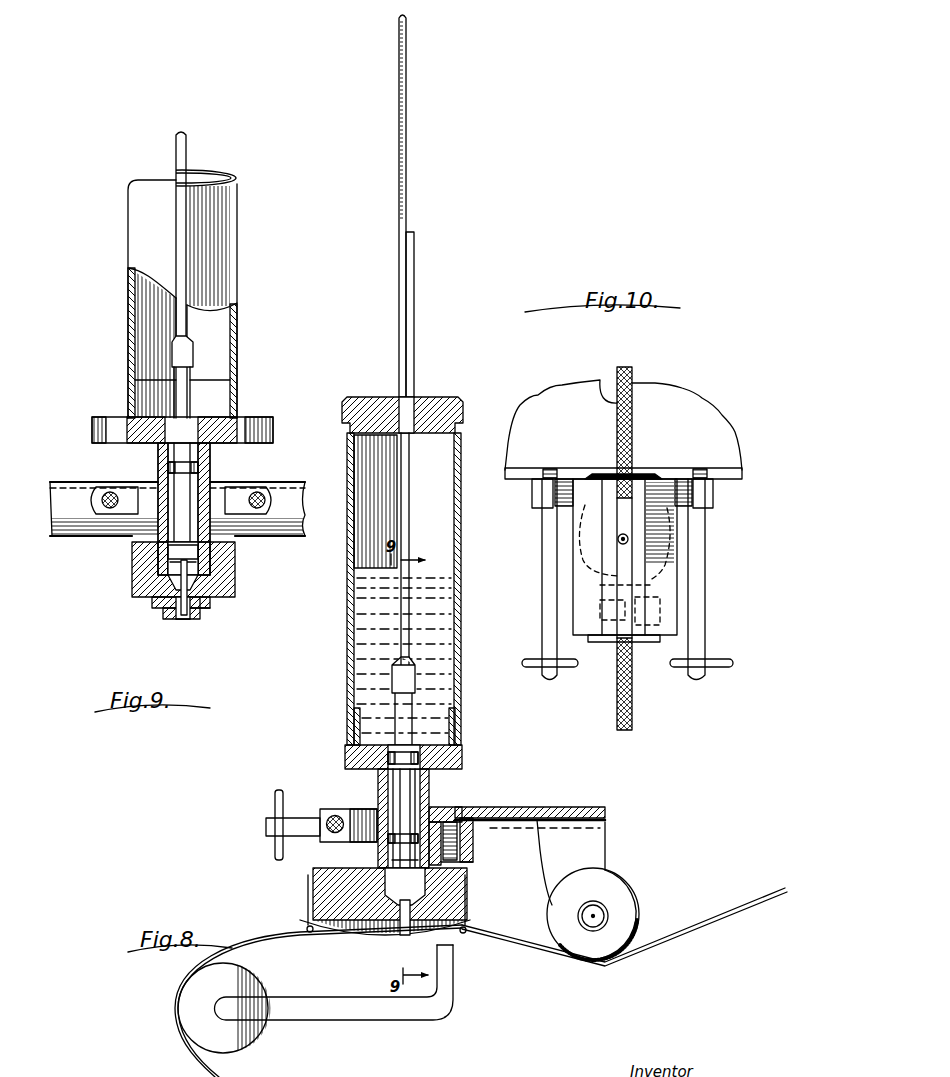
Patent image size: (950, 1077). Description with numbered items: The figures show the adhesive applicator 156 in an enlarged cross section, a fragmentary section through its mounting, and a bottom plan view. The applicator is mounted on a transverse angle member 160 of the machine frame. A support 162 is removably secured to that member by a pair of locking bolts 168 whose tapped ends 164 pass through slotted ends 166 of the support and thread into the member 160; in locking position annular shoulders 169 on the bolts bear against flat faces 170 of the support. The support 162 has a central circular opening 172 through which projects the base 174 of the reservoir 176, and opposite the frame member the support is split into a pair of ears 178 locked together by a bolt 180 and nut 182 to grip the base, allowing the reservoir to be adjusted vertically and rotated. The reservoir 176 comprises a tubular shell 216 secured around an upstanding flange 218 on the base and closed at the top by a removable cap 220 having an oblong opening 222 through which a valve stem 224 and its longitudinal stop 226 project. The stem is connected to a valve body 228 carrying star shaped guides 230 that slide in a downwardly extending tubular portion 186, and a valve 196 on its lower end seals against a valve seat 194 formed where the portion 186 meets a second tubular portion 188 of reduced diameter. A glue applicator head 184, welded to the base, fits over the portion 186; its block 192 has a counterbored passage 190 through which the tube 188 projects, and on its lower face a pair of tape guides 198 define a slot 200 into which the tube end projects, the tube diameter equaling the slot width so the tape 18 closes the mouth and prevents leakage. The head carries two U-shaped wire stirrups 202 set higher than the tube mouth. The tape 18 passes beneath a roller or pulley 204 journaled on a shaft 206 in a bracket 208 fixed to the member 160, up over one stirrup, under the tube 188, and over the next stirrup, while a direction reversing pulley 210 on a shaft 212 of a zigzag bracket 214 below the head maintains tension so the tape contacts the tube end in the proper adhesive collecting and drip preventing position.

In FIG. 9, the tape 18 is at (182, 616).
In FIG. 8, the tape 18 is at (745, 902).
In FIG. 10, the tape 18 is at (617, 375).
In FIG. 9, the adhesive applicator 156 is at (108, 393).
In FIG. 8, the adhesive applicator 156 is at (343, 760).
In FIG. 10, the adhesive applicator 156 is at (712, 604).
In FIG. 9, the transverse angle member 160 is at (65, 482).
In FIG. 8, the transverse angle member 160 is at (525, 805).
In FIG. 10, the transverse angle member 160 is at (680, 395).
In FIG. 9, the support 162 is at (135, 515).
In FIG. 8, the support 162 is at (435, 800).
In FIG. 10, the support 162 is at (690, 478).
In FIG. 8, the tapped ends 164 is at (475, 830).
In FIG. 10, the tapped ends 164 is at (560, 465).
In FIG. 9, the slotted ends 166 is at (98, 505).
In FIG. 10, the slotted ends 166 is at (702, 500).
In FIG. 9, the locking bolts 168 is at (112, 494).
In FIG. 8, the locking bolts 168 is at (266, 826).
In FIG. 10, the locking bolts 168 is at (548, 545).
In FIG. 10, the annular shoulders 169 is at (555, 505).
In FIG. 9, the flat faces 170 is at (255, 487).
In FIG. 10, the flat faces 170 is at (545, 508).
In FIG. 9, the central circular opening 172 is at (212, 520).
In FIG. 8, the central circular opening 172 is at (412, 795).
In FIG. 9, the base 174 is at (128, 440).
In FIG. 8, the base 174 is at (378, 797).
In FIG. 9, the reservoir 176 is at (240, 286).
In FIG. 8, the reservoir 176 is at (462, 635).
In FIG. 8, the ears 178 is at (345, 810).
In FIG. 10, the ears 178 is at (600, 640).
In FIG. 8, the bolt 180 is at (333, 842).
In FIG. 10, the bolt 180 is at (600, 610).
In FIG. 10, the nut 182 is at (648, 642).
In FIG. 9, the glue applicator head 184 is at (238, 555).
In FIG. 8, the glue applicator head 184 is at (312, 910).
In FIG. 10, the glue applicator head 184 is at (668, 580).
In FIG. 8, the tubular portion 186 is at (470, 866).
In FIG. 9, the second tubular portion 188 is at (176, 592).
In FIG. 8, the second tubular portion 188 is at (390, 940).
In FIG. 10, the second tubular portion 188 is at (618, 541).
In FIG. 8, the counterbored passage 190 is at (440, 895).
In FIG. 9, the block 192 is at (236, 570).
In FIG. 8, the block 192 is at (352, 905).
In FIG. 10, the block 192 is at (672, 540).
In FIG. 9, the valve seat 194 is at (168, 565).
In FIG. 8, the valve seat 194 is at (382, 870).
In FIG. 9, the valve 196 is at (210, 592).
In FIG. 8, the valve 196 is at (440, 875).
In FIG. 9, the tape guides 198 is at (172, 614).
In FIG. 10, the tape guides 198 is at (642, 585).
In FIG. 9, the slot 200 is at (188, 616).
In FIG. 8, the slot 200 is at (462, 975).
In FIG. 10, the slot 200 is at (615, 590).
In FIG. 9, the U-shaped wire stirrups 202 is at (202, 608).
In FIG. 8, the U-shaped wire stirrups 202 is at (310, 932).
In FIG. 10, the U-shaped wire stirrups 202 is at (645, 472).
In FIG. 8, the roller or pulley 204 is at (625, 890).
In FIG. 8, the shaft 206 is at (608, 918).
In FIG. 8, the bracket 208 is at (580, 857).
In FIG. 8, the direction reversing pulley 210 is at (265, 1033).
In FIG. 8, the shaft 212 is at (215, 1032).
In FIG. 8, the zigzag bracket 214 is at (403, 1022).
In FIG. 9, the tubular shell 216 is at (216, 262).
In FIG. 8, the tubular shell 216 is at (458, 600).
In FIG. 9, the upstanding flange 218 is at (245, 405).
In FIG. 8, the upstanding flange 218 is at (440, 730).
In FIG. 8, the cap 220 is at (428, 397).
In FIG. 8, the opening 222 is at (398, 405).
In FIG. 9, the valve stem 224 is at (190, 328).
In FIG. 8, the valve stem 224 is at (409, 525).
In FIG. 8, the stop 226 is at (408, 340).
In FIG. 9, the valve body 228 is at (192, 413).
In FIG. 8, the valve body 228 is at (412, 778).
In FIG. 9, the star shaped guides 230 is at (165, 470).
In FIG. 8, the star shaped guides 230 is at (409, 758).